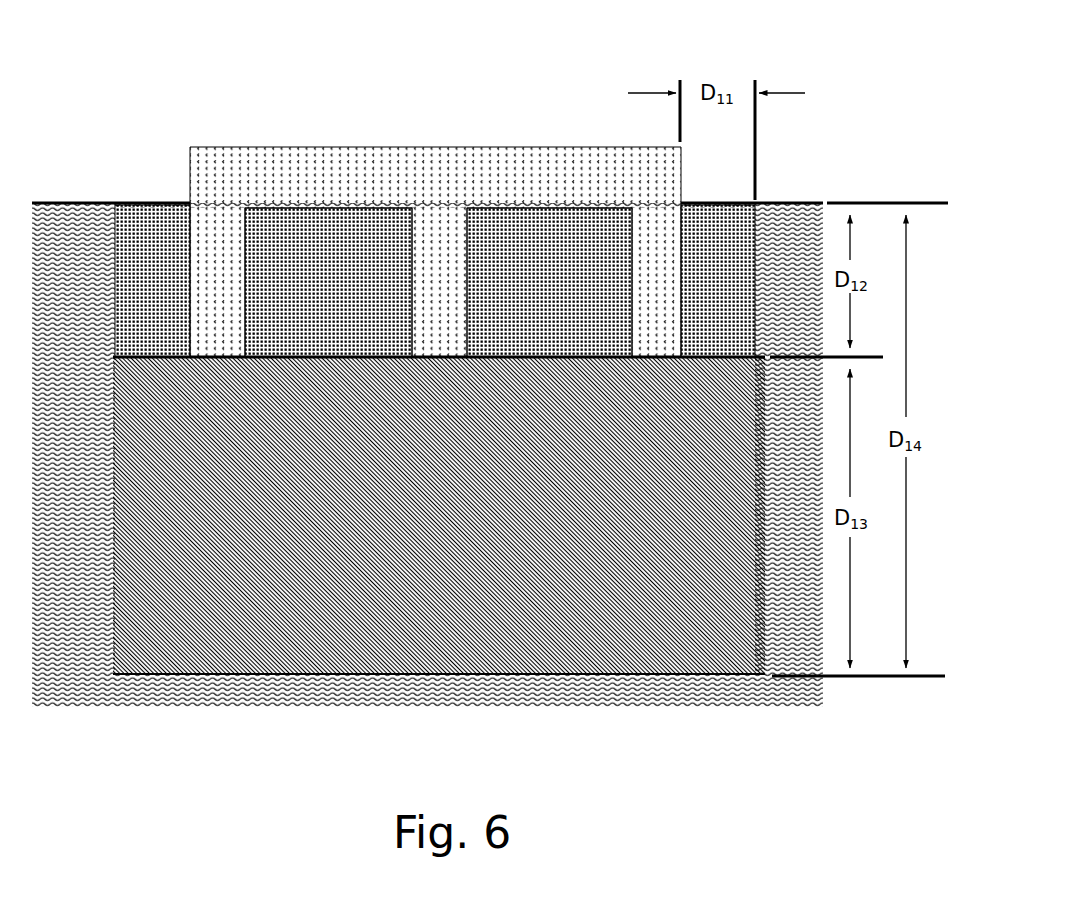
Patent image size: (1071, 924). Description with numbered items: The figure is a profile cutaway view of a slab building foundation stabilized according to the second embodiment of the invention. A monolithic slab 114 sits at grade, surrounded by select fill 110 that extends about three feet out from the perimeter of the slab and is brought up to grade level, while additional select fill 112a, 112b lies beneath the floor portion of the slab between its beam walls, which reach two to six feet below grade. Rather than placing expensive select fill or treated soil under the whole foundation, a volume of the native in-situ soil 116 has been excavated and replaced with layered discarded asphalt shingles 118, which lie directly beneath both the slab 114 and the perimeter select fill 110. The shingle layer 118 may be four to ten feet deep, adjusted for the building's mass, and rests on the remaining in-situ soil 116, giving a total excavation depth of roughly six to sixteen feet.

The select fill 110 is at (155, 243).
The select fill 112a is at (333, 240).
The select fill 112b is at (553, 237).
The monolithic slab 114 is at (438, 163).
The in-situ soil 116 is at (265, 692).
The discarded asphalt shingles 118 is at (603, 632).